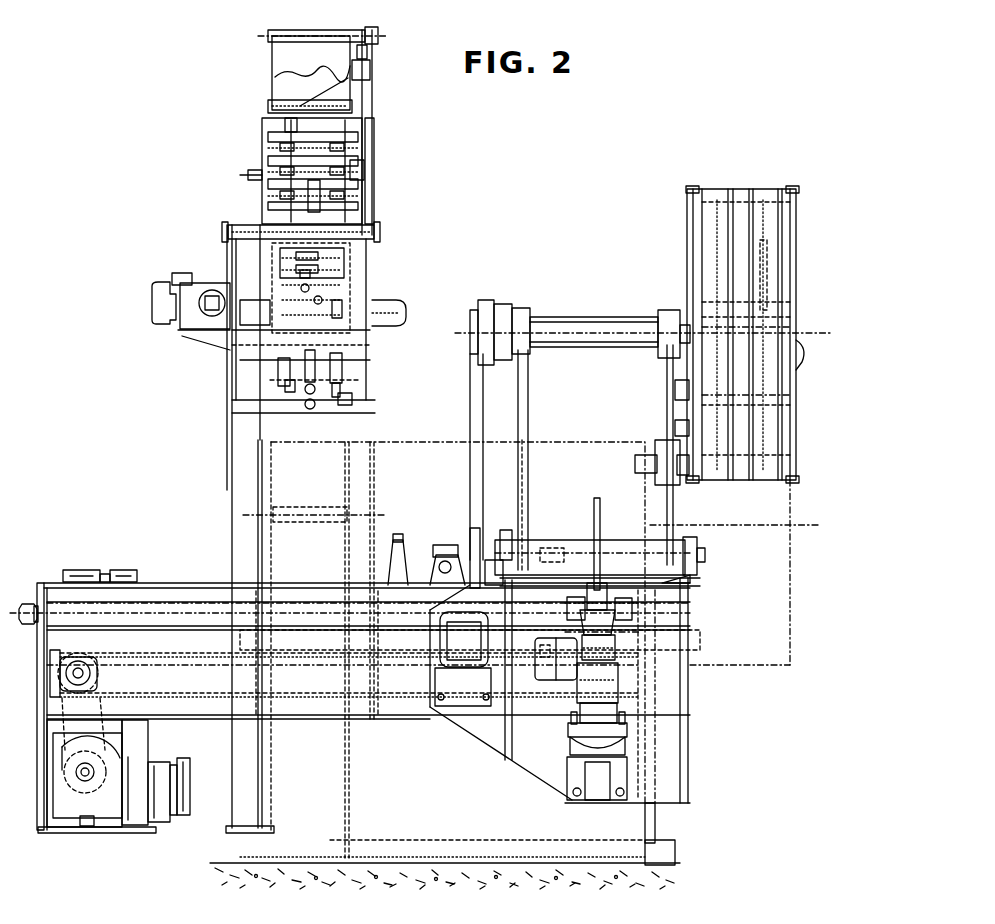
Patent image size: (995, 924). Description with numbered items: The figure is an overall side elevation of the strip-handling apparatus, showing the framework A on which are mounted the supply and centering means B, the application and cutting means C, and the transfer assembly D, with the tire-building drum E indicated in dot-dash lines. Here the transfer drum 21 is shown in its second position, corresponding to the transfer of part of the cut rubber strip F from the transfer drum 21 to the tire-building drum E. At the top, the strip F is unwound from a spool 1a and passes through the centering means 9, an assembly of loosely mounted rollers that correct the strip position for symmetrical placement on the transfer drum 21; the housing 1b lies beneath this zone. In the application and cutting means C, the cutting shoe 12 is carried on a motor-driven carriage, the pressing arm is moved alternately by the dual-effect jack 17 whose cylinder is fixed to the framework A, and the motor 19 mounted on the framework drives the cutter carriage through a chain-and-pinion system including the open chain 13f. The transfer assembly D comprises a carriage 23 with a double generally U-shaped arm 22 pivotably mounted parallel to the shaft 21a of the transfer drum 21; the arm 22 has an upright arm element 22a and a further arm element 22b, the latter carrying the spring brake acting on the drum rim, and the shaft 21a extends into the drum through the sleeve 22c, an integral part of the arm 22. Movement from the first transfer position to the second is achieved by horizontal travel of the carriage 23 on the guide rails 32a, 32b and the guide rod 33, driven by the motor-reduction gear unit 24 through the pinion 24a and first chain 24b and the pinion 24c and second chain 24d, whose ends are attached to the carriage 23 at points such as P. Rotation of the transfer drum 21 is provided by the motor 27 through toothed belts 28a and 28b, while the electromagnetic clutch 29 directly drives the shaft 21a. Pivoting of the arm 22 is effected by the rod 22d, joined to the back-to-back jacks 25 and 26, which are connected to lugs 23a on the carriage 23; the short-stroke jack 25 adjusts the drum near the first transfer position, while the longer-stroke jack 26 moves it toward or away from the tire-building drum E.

The spool 1a is at (278, 553).
The frame housing 1b is at (280, 480).
The centering means 9 is at (356, 170).
The cutting shoe 12 is at (346, 258).
The open chain 13f is at (390, 316).
The dual-effect jack 17 is at (312, 404).
The motor 19 is at (176, 280).
The transfer drum 21 is at (740, 188).
The shaft 21a is at (798, 342).
The double generally U-shaped arm 22 is at (540, 432).
The frame upright 22a is at (526, 487).
The arm element 22b is at (666, 420).
The sleeve 22c is at (558, 329).
The rod 22d is at (596, 517).
The carriage 23 is at (658, 811).
The lug 23a is at (572, 782).
The motor-reduction gear unit 24 is at (166, 818).
The pinion 24a is at (58, 790).
The first chain 24b is at (66, 736).
The pinion 24c is at (100, 674).
The second chain 24d is at (318, 702).
The jack 25 is at (604, 652).
The jack 26 is at (624, 731).
The motor 27 is at (440, 638).
The toothed belt 28a is at (474, 555).
The toothed belt 28b is at (484, 380).
The electromagnetic clutch 29 is at (486, 300).
The guide rail 32a is at (154, 586).
The guide rail 32b is at (166, 721).
The guide rod 33 is at (350, 616).
The framework A is at (233, 505).
The supply and centering means B is at (262, 147).
The application and cutting means C is at (342, 252).
The transfer assembly D is at (715, 187).
The tire-building drum E is at (740, 666).
The rubber strip F is at (272, 67).
The chain attachment point P is at (556, 659).